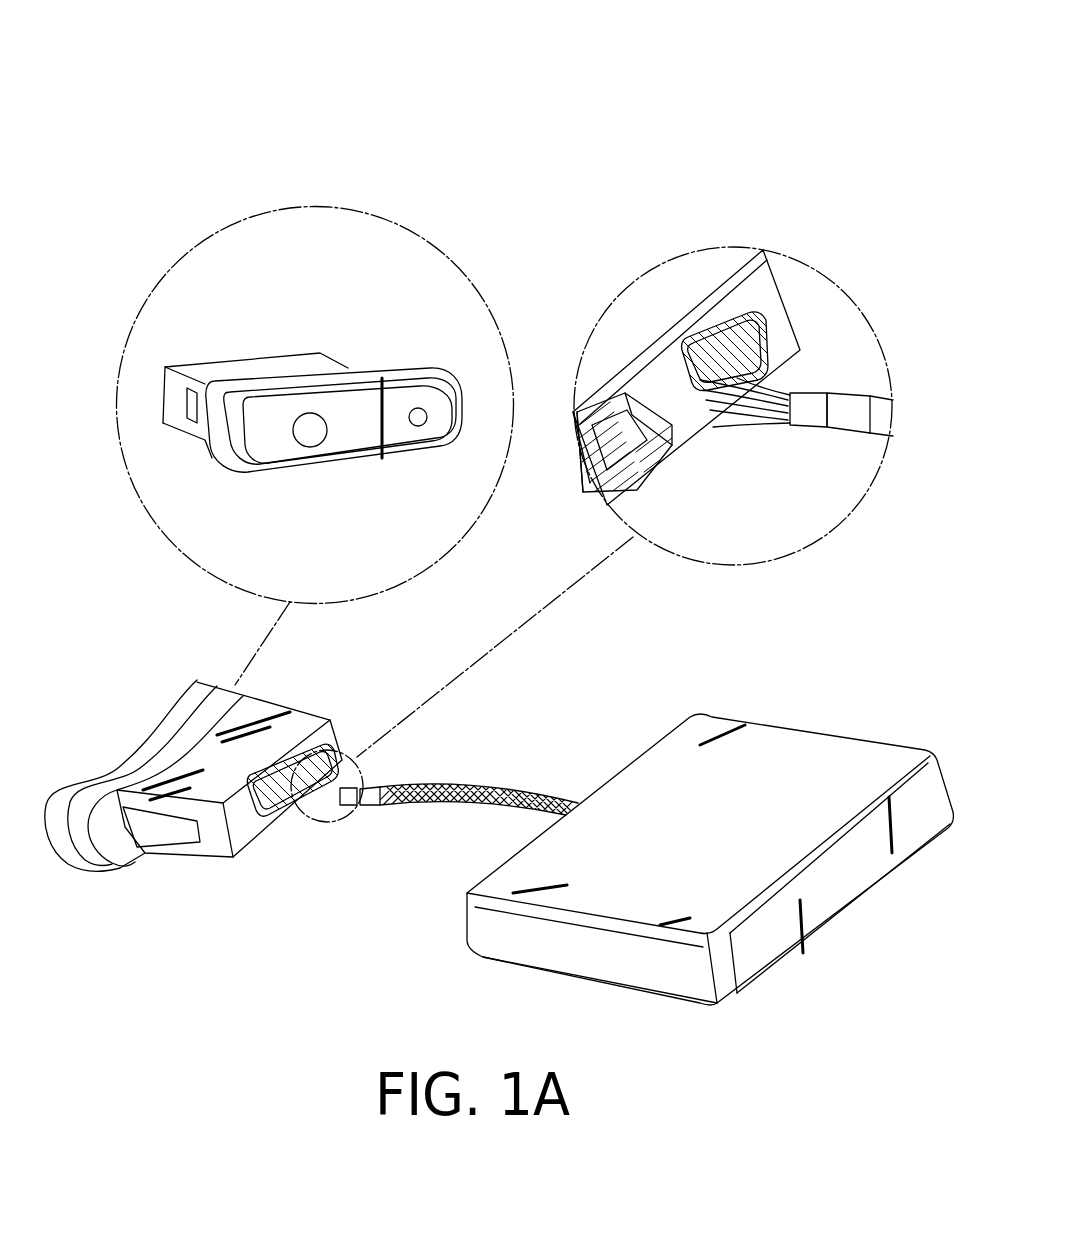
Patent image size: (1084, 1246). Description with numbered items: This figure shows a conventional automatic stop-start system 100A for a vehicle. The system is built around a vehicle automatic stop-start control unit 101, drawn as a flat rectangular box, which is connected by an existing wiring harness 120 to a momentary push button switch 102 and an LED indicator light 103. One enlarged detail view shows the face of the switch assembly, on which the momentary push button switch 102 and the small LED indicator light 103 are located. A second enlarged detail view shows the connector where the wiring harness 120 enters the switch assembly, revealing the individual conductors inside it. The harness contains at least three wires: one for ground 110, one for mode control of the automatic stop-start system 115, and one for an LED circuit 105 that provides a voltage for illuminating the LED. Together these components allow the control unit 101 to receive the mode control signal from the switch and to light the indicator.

The conventional automatic stop-start system 100A is at (886, 63).
The vehicle automatic stop-start control unit 101 is at (710, 826).
The momentary push button switch 102 is at (312, 429).
The LED indicator light 103 is at (392, 371).
The LED circuit wire 105 is at (641, 447).
The ground wire 110 is at (803, 428).
The mode control wire 115 is at (737, 449).
The existing wiring harness 120 is at (471, 776).